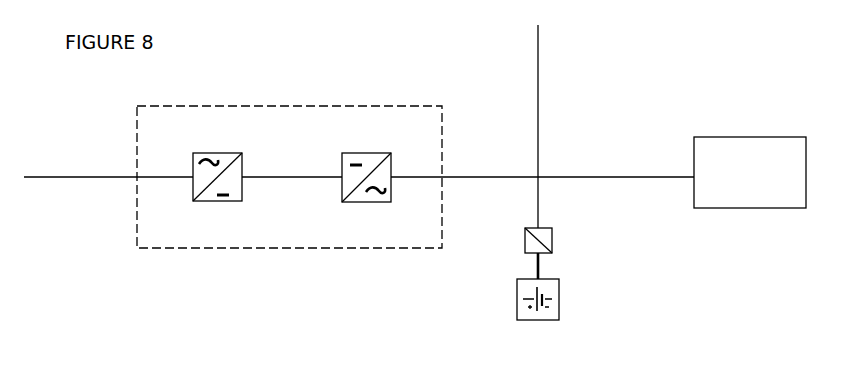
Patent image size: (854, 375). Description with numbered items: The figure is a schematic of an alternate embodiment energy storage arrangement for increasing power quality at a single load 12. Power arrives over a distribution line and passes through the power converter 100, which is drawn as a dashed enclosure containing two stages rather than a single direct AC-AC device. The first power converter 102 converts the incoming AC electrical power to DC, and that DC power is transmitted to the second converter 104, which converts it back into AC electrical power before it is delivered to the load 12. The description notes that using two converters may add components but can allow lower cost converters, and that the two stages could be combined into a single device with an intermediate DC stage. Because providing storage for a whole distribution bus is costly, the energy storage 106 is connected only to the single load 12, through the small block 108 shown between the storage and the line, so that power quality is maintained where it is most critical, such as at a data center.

The power converter 100 is at (221, 250).
The first power converter 102 is at (220, 152).
The second converter 104 is at (369, 153).
The energy storage 106 is at (518, 302).
The converter 108 is at (552, 244).
The load 12 is at (748, 136).